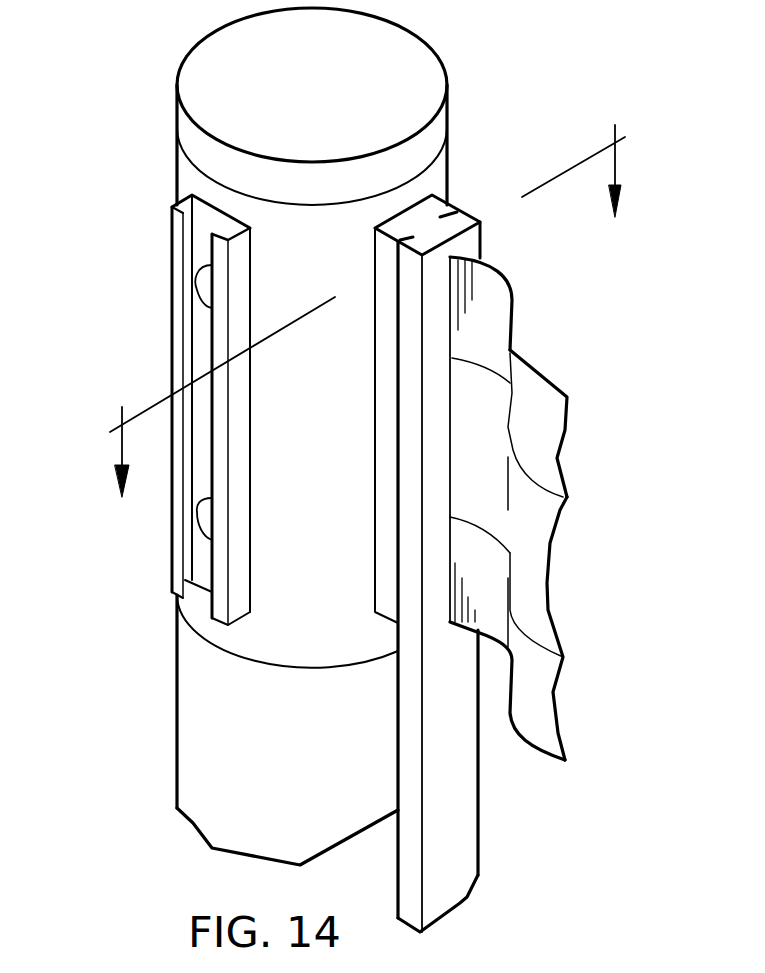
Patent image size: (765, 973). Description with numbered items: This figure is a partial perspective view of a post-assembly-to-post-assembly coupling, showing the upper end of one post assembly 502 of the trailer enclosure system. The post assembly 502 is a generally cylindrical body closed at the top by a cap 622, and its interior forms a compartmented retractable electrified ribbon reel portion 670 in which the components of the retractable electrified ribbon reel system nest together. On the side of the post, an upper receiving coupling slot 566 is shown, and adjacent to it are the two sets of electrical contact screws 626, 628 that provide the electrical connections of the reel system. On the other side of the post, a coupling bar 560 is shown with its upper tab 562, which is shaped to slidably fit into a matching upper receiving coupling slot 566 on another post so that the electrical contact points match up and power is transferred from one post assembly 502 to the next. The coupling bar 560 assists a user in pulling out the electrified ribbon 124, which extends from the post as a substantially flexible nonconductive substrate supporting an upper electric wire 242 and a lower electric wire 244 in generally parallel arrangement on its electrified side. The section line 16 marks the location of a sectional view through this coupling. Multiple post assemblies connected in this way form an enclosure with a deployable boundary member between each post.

The post assembly 502 is at (136, 779).
The cap 622 is at (432, 44).
The compartmented retractable electrified ribbon reel portion 670 is at (440, 162).
The upper receiving coupling slot 566 is at (170, 208).
The electrical contact screws 626 is at (197, 278).
The electrical contact screws 628 is at (195, 522).
The section line 16- 16 is at (372, 303).
The upper tab 562 is at (467, 218).
The coupling bar 560 is at (465, 838).
The electrified ribbon 124 is at (535, 380).
The upper electric wire 242 is at (568, 497).
The lower electric wire 244 is at (564, 657).